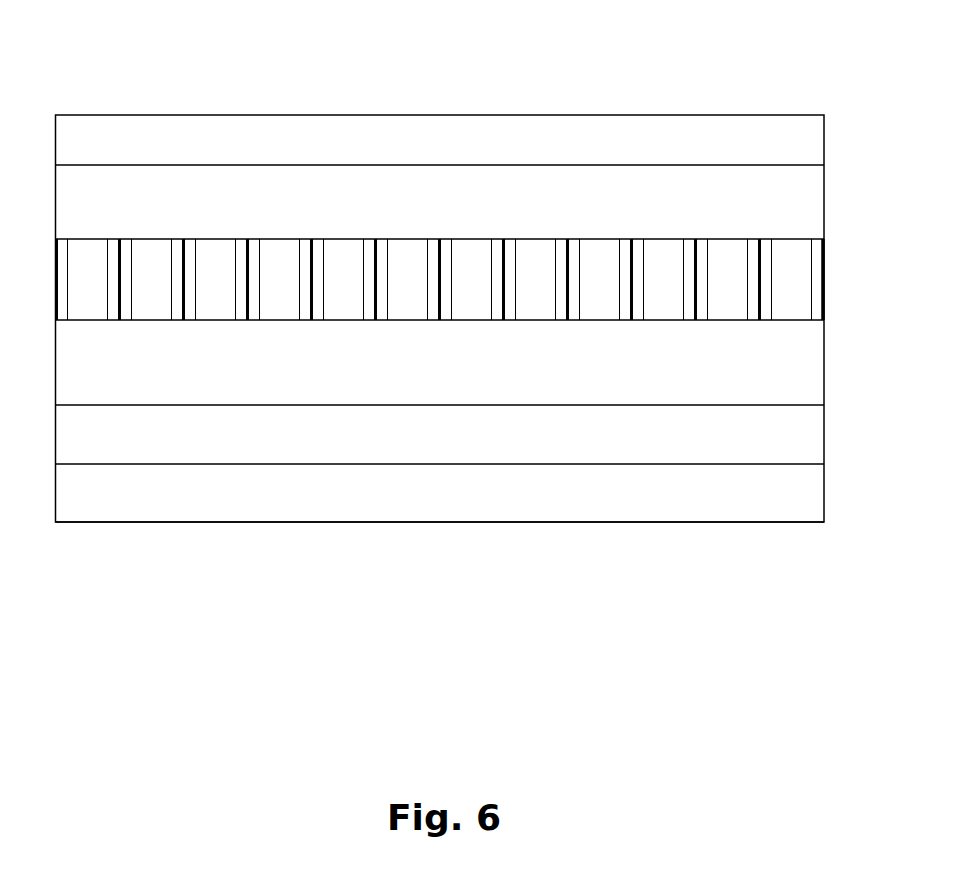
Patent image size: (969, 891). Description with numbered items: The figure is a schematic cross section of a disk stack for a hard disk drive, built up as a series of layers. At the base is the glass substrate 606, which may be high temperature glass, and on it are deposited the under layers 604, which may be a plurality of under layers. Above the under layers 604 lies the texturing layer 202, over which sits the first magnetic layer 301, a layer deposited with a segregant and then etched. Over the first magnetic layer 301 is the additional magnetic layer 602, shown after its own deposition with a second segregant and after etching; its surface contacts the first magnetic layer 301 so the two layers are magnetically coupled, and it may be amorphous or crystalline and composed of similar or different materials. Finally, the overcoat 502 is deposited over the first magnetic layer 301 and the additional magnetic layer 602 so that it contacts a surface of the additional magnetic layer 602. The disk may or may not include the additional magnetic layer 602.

The overcoat 502 is at (648, 159).
The additional magnetic layer 602 is at (502, 219).
The first magnetic layer 301 is at (826, 280).
The texturing layer 202 is at (744, 376).
The under layers 604 is at (744, 435).
The glass substrate 606 is at (745, 493).